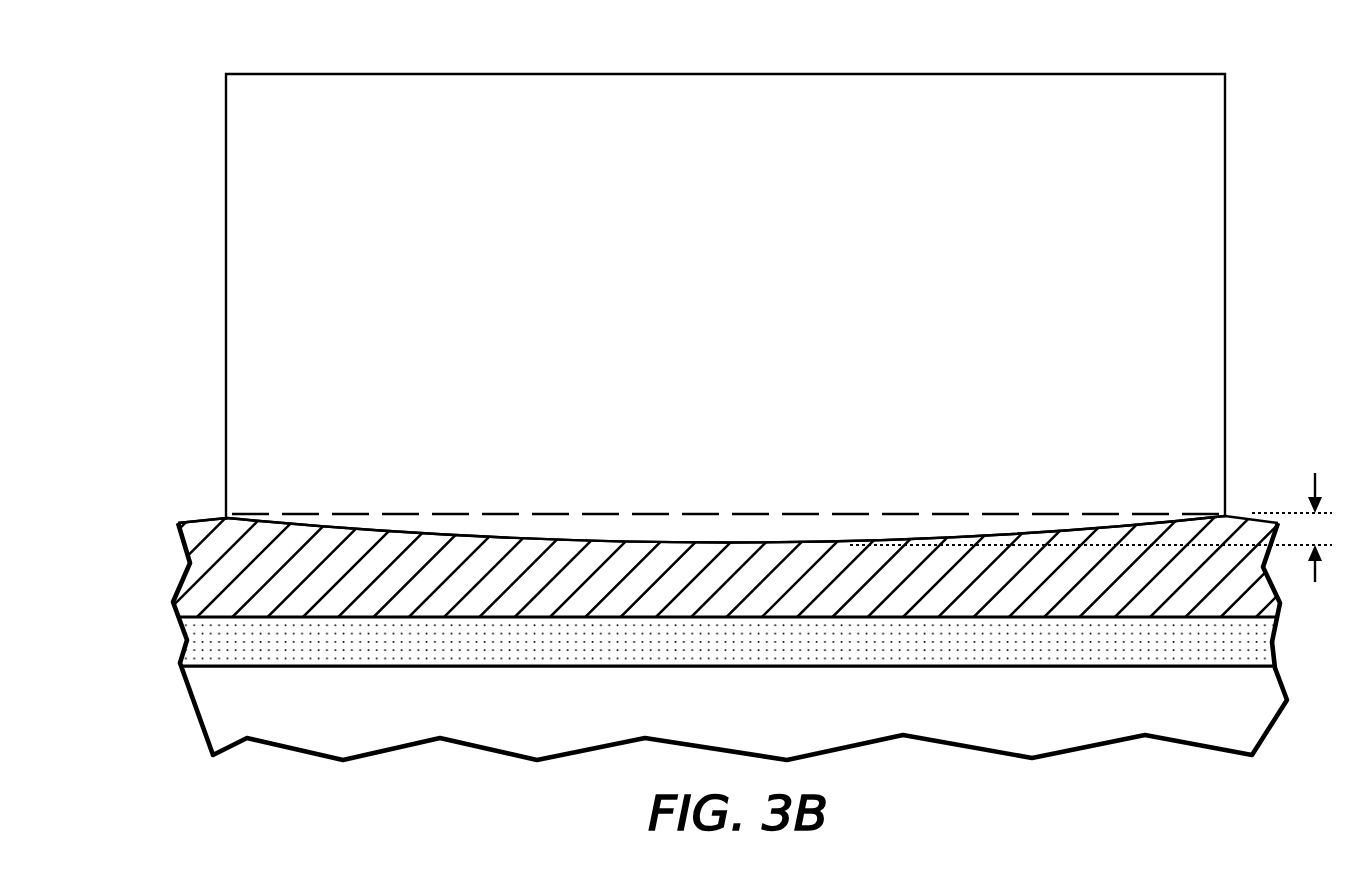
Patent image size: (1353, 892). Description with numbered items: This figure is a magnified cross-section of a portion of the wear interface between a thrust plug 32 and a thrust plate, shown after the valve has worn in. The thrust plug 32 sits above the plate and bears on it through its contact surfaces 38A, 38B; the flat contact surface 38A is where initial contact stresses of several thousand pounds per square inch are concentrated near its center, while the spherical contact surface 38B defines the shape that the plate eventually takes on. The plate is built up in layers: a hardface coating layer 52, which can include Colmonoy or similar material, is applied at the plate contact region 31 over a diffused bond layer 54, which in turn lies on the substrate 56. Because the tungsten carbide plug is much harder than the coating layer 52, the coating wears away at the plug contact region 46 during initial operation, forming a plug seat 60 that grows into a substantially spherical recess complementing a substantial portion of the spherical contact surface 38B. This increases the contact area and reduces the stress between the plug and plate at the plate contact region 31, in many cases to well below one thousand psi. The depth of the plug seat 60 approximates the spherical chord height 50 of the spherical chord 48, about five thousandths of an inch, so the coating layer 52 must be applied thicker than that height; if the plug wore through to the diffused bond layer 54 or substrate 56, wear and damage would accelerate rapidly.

The plate contact region 31 is at (457, 772).
The thrust plug 32 is at (210, 304).
The flat contact surface 38A is at (228, 518).
The spherical contact surface 38B is at (572, 540).
The plug contact region 46 is at (538, 527).
The spherical chord 48 is at (780, 512).
The spherical chord height 50 is at (1091, 527).
The hardface coating layer 52 is at (172, 575).
The diffused bond layer 54 is at (186, 639).
The substrate 56 is at (197, 717).
The plug seat 60 is at (771, 543).